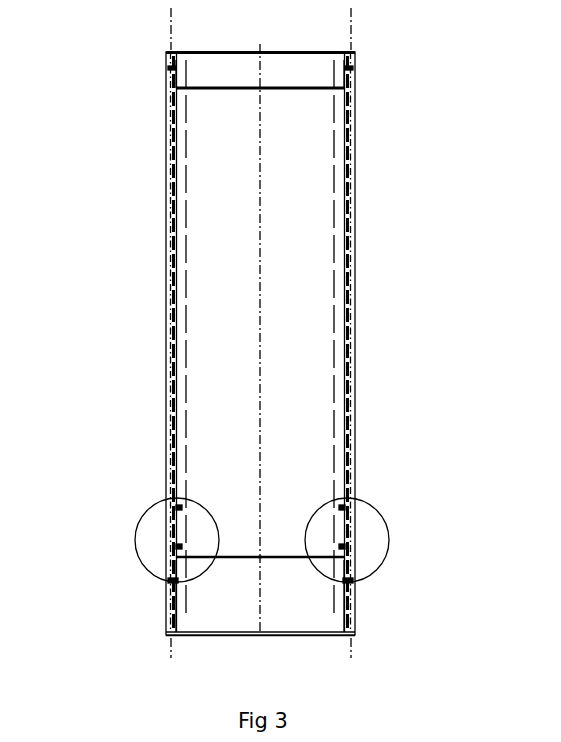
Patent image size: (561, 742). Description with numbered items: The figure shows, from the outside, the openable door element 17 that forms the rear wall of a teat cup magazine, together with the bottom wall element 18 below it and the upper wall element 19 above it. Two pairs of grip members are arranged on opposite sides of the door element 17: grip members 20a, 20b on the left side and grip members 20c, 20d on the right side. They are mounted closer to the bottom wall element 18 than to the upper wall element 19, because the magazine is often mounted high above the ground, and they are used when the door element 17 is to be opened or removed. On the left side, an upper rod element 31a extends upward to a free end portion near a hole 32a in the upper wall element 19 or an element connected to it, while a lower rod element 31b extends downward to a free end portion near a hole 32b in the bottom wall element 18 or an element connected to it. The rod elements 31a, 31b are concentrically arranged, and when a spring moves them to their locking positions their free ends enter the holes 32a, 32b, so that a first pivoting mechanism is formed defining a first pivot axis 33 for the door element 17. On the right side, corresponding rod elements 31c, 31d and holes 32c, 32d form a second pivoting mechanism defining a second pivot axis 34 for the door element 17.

The door element 17 is at (223, 342).
The bottom wall element 18 is at (287, 580).
The upper wall element 19 is at (223, 70).
The grip member 20a is at (160, 508).
The grip member 20b is at (158, 547).
The grip member 20c is at (357, 507).
The grip member 20d is at (358, 547).
The upper rod element 31a is at (172, 233).
The lower rod element 31b is at (165, 563).
The rod element 31c is at (352, 233).
The rod element 31d is at (353, 562).
The hole 32a is at (170, 68).
The hole 32b is at (165, 582).
The hole 32c is at (352, 68).
The hole 32d is at (353, 583).
The first pivot axis 33 is at (171, 33).
The second pivot axis 34 is at (352, 33).